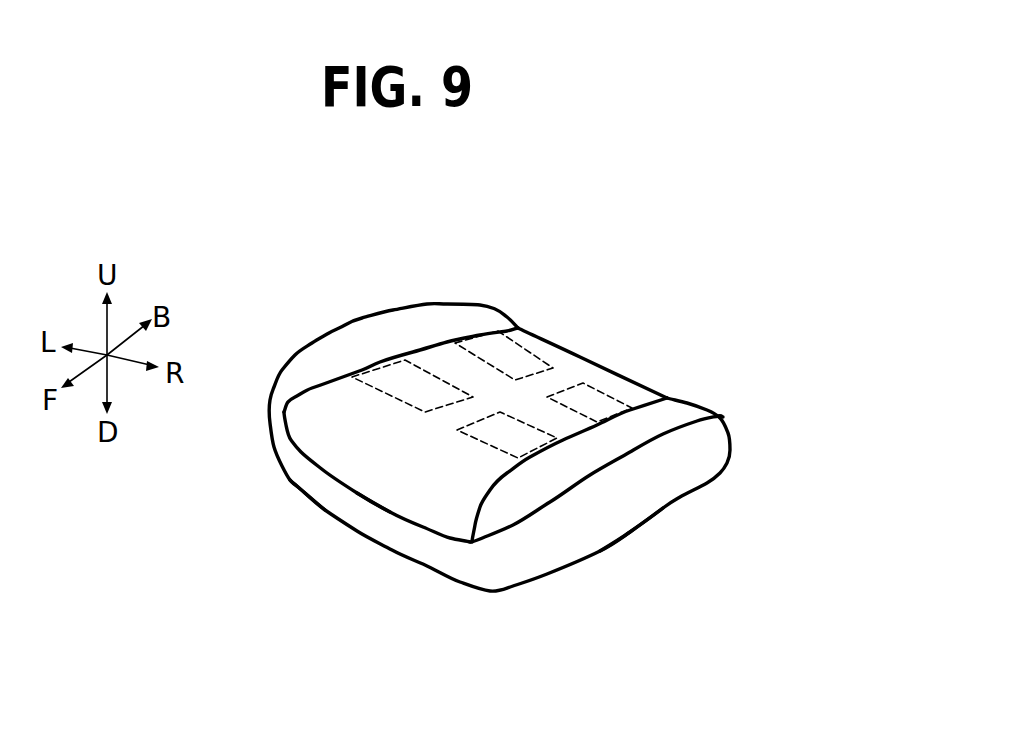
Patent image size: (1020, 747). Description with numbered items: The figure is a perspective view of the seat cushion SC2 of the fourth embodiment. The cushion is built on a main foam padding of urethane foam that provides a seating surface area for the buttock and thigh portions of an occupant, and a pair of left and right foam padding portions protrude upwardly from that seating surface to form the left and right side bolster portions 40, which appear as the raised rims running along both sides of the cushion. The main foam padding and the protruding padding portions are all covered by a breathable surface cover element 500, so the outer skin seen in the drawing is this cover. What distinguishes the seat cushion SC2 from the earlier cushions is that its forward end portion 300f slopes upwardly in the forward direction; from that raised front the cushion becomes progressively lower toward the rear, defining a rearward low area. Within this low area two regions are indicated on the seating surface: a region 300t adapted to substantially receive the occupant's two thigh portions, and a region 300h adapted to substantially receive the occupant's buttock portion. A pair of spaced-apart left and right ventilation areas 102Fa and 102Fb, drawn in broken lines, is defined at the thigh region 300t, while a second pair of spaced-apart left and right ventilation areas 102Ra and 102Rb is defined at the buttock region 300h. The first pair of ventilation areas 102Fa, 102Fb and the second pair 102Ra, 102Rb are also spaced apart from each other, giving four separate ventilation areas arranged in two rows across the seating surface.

The seat cushion SC2 is at (757, 281).
The breathable surface cover element 500 is at (455, 488).
The side bolster portion 40 is at (330, 340).
The region adapted to receive buttock portion 300h is at (577, 367).
The forward end portion 300f is at (345, 405).
The region adapted to receive thigh portions 300t is at (437, 428).
The left ventilation area 102Fa is at (420, 380).
The left ventilation area 102Ra is at (505, 365).
The right ventilation area 102Fb is at (527, 442).
The right ventilation area 102Rb is at (597, 404).